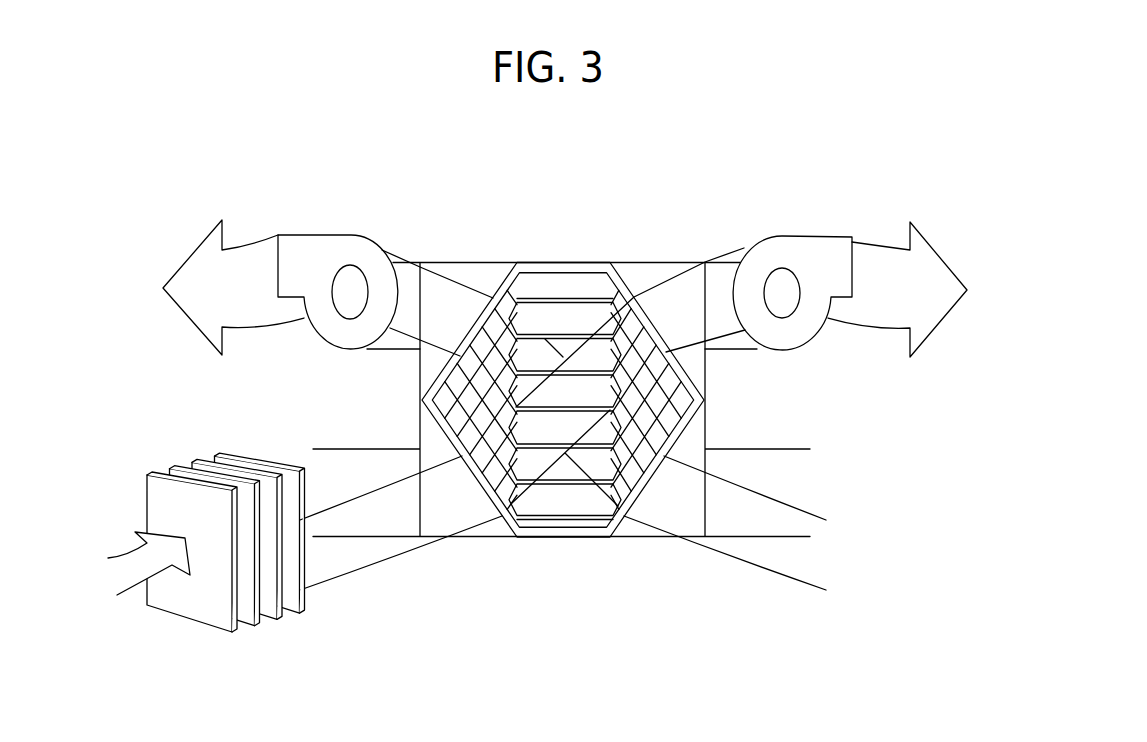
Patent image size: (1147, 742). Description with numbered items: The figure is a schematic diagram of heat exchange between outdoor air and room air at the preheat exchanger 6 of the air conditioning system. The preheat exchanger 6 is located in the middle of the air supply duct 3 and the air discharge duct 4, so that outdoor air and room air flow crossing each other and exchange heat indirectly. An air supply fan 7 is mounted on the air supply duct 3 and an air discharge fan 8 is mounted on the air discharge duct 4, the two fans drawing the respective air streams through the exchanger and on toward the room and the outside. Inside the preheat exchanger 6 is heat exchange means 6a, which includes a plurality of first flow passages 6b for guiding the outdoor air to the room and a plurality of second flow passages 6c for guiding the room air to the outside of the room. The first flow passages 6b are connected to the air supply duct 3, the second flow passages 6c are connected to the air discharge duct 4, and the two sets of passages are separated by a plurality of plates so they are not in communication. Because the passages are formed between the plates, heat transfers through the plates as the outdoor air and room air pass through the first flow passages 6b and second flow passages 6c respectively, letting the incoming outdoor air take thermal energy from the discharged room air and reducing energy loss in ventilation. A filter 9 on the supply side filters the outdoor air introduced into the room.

The air supply duct 3 is at (787, 458).
The air discharge duct 4 is at (736, 344).
The preheat exchanger 6 is at (513, 262).
The heat exchange means 6a is at (632, 288).
The first flow passages 6b is at (553, 462).
The second flow passages 6c is at (522, 332).
The air supply fan 7 is at (815, 247).
The air discharge fan 8 is at (316, 245).
The filter 9 is at (190, 611).